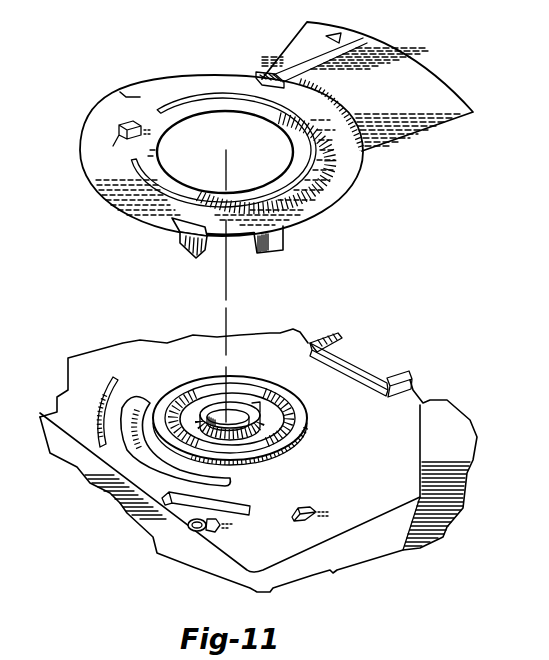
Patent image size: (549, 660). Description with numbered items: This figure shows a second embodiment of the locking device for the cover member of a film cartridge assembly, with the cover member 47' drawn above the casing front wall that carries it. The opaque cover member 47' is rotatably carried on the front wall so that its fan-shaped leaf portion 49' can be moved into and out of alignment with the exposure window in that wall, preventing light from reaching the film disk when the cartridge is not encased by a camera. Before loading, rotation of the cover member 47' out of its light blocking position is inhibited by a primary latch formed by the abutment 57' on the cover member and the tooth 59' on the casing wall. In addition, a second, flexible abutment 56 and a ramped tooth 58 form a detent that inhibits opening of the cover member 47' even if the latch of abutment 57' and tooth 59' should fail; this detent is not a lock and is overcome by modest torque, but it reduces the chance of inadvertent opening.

The cover member 47' is at (208, 120).
The fan-shaped leaf portion 49' is at (372, 86).
The flexible abutment 56 is at (286, 245).
The abutment 57' is at (148, 240).
The ramped tooth 58 is at (300, 506).
The tooth 59' is at (174, 556).